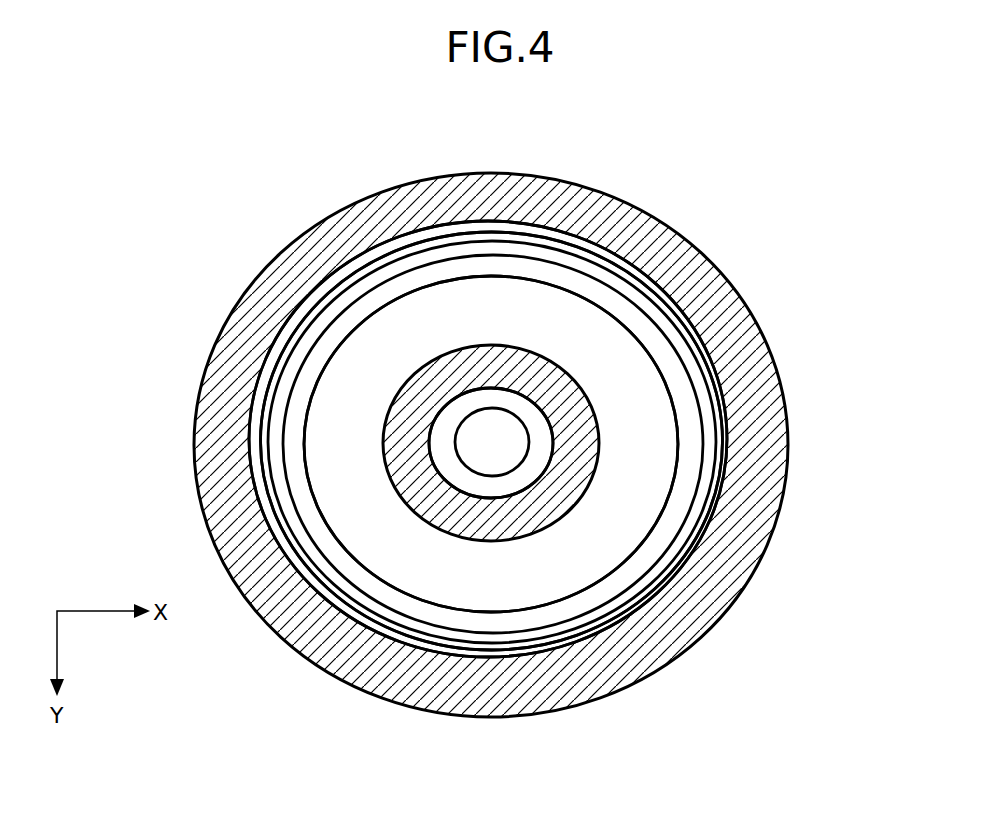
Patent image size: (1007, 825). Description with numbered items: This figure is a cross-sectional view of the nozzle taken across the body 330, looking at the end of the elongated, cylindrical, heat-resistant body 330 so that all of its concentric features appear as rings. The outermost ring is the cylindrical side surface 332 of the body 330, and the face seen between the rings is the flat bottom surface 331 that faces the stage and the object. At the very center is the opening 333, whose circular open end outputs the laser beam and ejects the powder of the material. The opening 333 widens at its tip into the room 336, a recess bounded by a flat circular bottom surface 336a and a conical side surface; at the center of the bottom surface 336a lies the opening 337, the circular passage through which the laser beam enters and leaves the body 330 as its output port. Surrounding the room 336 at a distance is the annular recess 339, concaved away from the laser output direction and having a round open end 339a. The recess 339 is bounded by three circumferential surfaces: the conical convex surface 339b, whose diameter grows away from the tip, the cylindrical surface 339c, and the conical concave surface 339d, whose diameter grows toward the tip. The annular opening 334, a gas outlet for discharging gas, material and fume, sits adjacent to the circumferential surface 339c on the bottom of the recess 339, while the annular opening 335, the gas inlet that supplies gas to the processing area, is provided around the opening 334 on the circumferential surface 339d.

The body 330 is at (674, 226).
The bottom surface 331 is at (328, 637).
The side surface 332 is at (647, 676).
The opening 333 is at (491, 443).
The opening 334 is at (667, 364).
The opening 335 is at (306, 323).
The room 336 is at (508, 500).
The bottom surface 336a is at (463, 410).
The opening 337 is at (523, 432).
The recess 339 is at (491, 444).
The open end 339a is at (253, 458).
The circumferential surface 339b is at (663, 445).
The circumferential surface 339c is at (651, 572).
The circumferential surface 339d is at (280, 480).